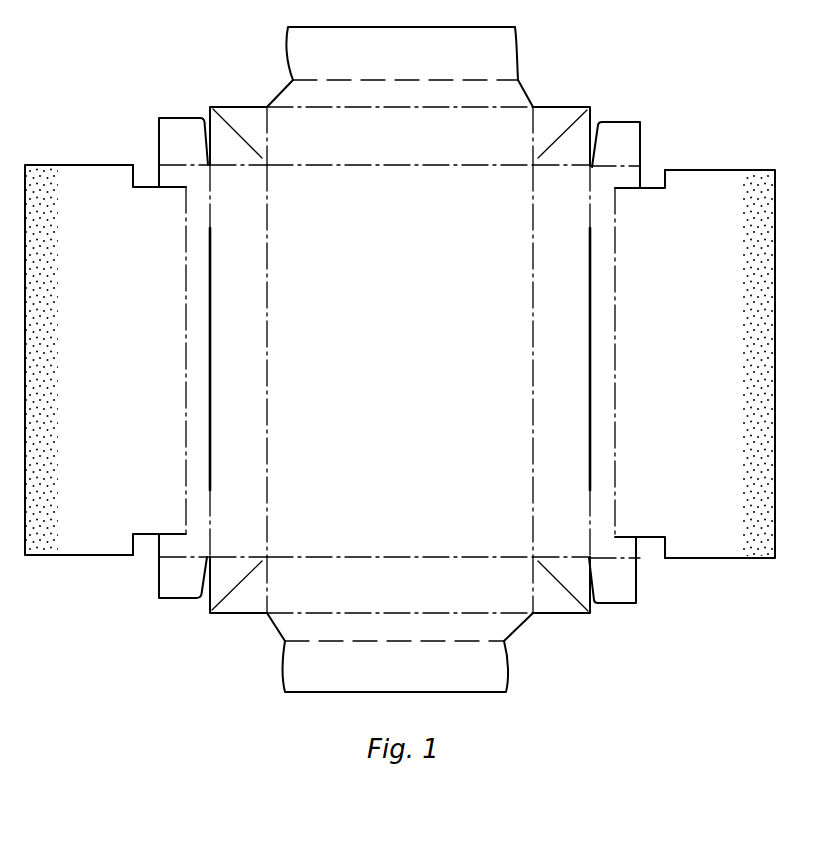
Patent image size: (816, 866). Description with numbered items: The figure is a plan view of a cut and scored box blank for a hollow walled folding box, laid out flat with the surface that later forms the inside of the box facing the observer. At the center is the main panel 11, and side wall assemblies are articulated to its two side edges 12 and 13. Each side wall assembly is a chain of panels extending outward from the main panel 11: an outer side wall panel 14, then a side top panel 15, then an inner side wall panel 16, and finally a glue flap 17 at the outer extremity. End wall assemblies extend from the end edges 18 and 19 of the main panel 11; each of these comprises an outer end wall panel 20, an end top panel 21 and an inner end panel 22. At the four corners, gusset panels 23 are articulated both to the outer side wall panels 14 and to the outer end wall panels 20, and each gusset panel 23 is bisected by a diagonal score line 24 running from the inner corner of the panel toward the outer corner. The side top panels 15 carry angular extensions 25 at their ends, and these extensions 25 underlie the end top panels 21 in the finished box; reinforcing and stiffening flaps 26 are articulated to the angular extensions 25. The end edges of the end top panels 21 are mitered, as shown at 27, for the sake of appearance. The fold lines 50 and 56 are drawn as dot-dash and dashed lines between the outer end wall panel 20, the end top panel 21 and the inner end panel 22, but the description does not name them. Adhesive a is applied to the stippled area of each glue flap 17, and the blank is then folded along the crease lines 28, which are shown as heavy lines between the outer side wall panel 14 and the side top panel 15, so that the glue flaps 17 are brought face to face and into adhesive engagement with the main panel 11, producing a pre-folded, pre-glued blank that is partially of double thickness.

The main panel 11 is at (396, 339).
The side edge 12 is at (270, 301).
The side edge 13 is at (532, 306).
The outer side wall panel 14 is at (233, 339).
The side top panel 15 is at (193, 339).
The inner side wall panel 16 is at (399, 361).
The glue flap 17 is at (81, 339).
The end edge 18 is at (372, 167).
The end edge 19 is at (362, 558).
The outer end wall panel 20 is at (394, 142).
The end top panel 21 is at (394, 101).
The inner end panel 22 is at (392, 61).
The gusset panel 23 is at (233, 146).
The diagonal score line 24 is at (259, 152).
The angular extension 25 is at (172, 185).
The reinforcing and stiffening flap 26 is at (177, 152).
The mitered end edge 27 is at (287, 87).
The crease line 28 is at (213, 268).
The fold line 50 is at (436, 109).
The fold line 56 is at (432, 79).
The adhesive a is at (46, 264).